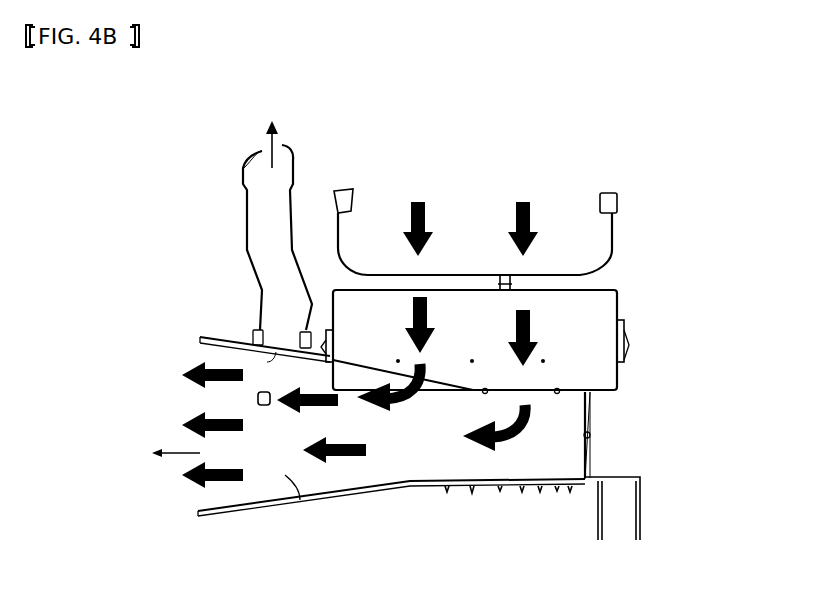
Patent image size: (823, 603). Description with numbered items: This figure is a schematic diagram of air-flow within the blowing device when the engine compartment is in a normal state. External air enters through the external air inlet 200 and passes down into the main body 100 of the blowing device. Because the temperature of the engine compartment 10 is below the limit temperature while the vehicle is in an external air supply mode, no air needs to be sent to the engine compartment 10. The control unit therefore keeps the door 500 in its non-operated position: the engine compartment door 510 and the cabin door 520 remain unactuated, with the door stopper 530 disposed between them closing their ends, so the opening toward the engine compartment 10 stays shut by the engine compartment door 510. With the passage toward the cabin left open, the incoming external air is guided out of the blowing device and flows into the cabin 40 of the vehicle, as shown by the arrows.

The engine compartment 10 is at (243, 166).
The external air inlet 200 is at (600, 238).
The main body 100 is at (600, 306).
The cabin 40 is at (210, 500).
The door 500 is at (76, 355).
The engine compartment door 510 is at (267, 362).
The door stopper 530 is at (257, 397).
The cabin door 520 is at (285, 475).